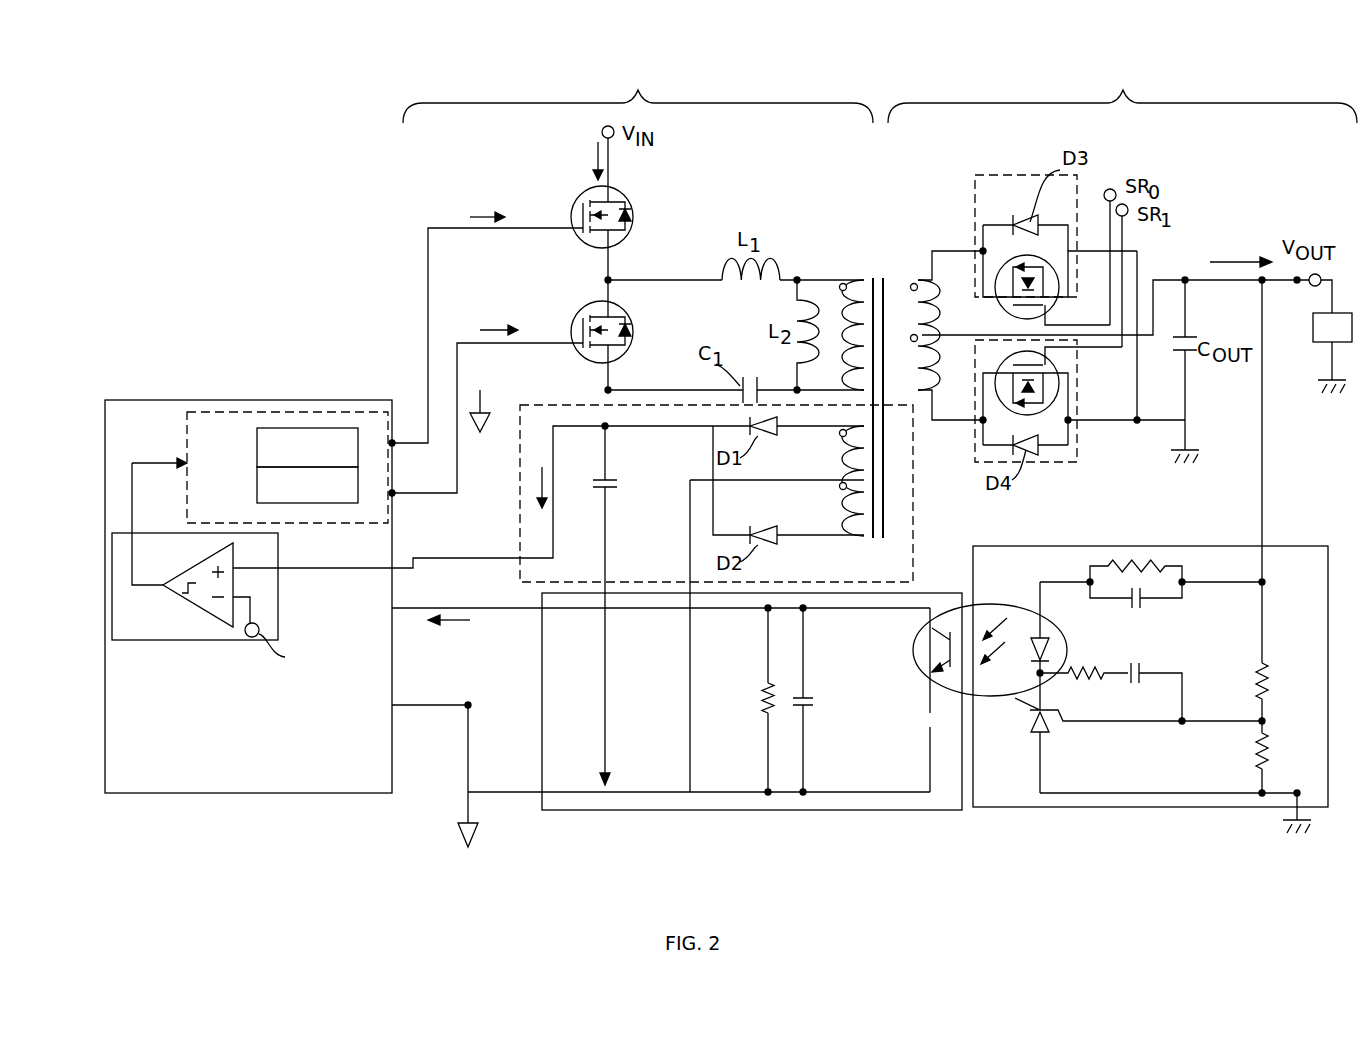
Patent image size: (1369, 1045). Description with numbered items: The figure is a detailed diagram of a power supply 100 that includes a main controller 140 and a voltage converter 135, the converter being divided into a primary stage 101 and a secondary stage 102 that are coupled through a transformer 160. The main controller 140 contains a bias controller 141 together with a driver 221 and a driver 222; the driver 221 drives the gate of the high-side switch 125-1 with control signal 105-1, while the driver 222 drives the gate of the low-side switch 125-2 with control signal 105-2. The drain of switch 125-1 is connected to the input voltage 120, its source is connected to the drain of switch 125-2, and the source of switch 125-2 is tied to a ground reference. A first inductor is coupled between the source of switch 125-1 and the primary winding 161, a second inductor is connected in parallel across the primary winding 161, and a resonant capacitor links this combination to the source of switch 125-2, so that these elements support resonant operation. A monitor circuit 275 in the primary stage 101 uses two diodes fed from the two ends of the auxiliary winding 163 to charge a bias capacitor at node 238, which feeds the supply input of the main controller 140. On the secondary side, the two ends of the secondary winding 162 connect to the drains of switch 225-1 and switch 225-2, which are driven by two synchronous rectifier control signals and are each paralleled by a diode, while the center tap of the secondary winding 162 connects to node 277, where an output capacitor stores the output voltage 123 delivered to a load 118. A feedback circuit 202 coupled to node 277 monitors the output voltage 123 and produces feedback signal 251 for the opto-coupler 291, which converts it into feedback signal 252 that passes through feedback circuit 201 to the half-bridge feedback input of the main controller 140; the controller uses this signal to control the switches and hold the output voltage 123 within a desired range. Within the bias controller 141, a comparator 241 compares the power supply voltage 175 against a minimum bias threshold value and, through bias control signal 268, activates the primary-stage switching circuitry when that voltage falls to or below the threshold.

The power supply 100 is at (259, 78).
The primary stage 101 is at (638, 92).
The secondary stage 102 is at (1122, 92).
The control signal 105-1 is at (490, 212).
The control signal 105-2 is at (500, 325).
The load 118 is at (1313, 331).
The input voltage 120 is at (596, 150).
The output voltage 123 is at (1232, 262).
The switch 125-1 is at (633, 218).
The switch 125-2 is at (633, 333).
The voltage converter 135 is at (268, 192).
The main controller 140 is at (217, 614).
The bias controller 141 is at (195, 640).
The transformer 160 is at (887, 473).
The primary winding 161 is at (840, 283).
The secondary winding 162 is at (922, 282).
The auxiliary winding 163 is at (840, 468).
The power supply voltage 175 is at (538, 487).
The feedback circuit 201 is at (613, 815).
The feedback circuit 202 is at (1150, 580).
The driver 221 is at (265, 428).
The driver 222 is at (257, 488).
The switch 225-1 is at (1007, 311).
The switch 225-2 is at (1040, 413).
The node 238 is at (618, 430).
The comparator 241 is at (222, 625).
The feedback signal 251 is at (1055, 590).
The feedback signal 252 is at (464, 622).
The bias control signal 268 is at (132, 493).
The monitor circuit 275 is at (913, 526).
The node 277 is at (1186, 278).
The opto-coupler 291 is at (913, 648).